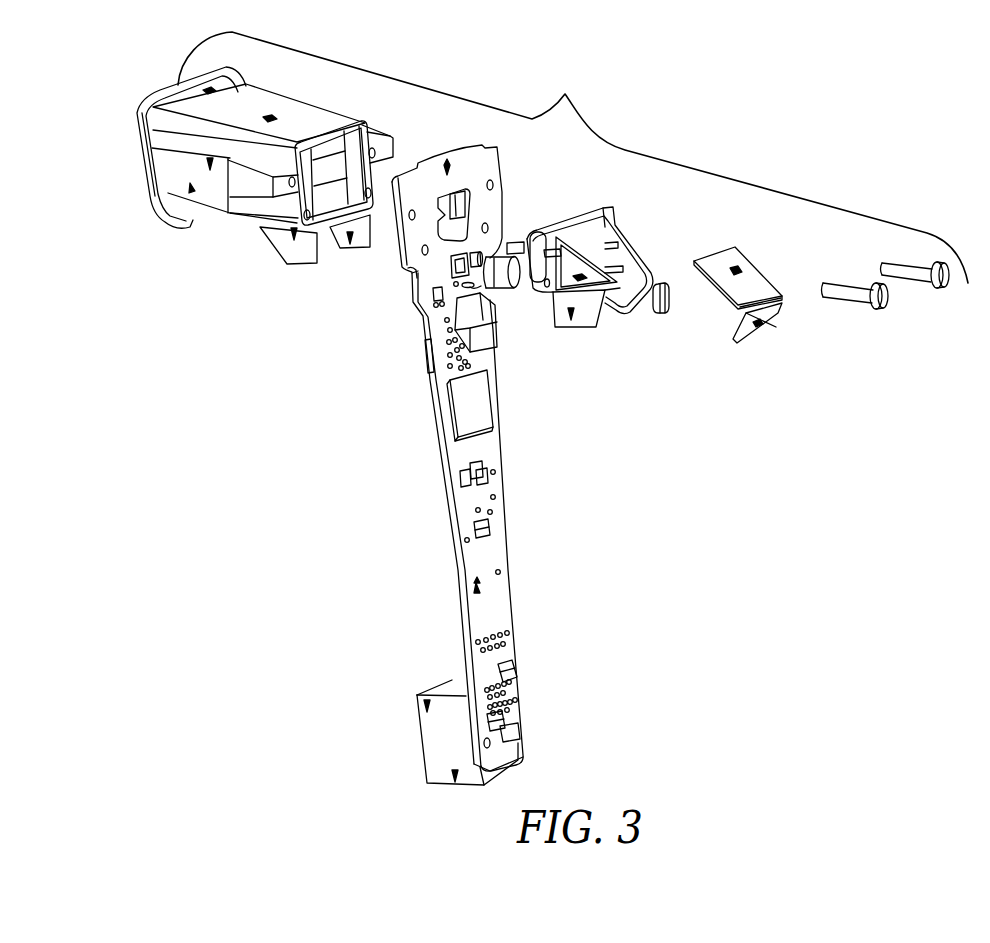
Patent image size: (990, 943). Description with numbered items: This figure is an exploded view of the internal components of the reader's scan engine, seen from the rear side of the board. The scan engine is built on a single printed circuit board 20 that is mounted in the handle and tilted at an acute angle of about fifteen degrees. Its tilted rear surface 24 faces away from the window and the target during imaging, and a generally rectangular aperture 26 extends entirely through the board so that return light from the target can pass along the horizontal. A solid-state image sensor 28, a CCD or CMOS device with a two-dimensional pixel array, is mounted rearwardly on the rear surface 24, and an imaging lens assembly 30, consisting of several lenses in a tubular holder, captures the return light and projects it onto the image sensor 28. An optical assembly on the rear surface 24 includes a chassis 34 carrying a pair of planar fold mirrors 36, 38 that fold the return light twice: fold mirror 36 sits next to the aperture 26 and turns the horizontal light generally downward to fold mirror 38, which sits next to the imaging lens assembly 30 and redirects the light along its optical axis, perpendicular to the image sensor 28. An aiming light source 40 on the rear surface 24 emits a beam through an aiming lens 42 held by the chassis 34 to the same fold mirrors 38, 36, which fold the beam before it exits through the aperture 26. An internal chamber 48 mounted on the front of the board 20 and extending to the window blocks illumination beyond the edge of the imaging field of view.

The printed circuit board 20 is at (460, 574).
The tilted rear surface 24 is at (504, 594).
The aperture 26 is at (428, 252).
The solid-state image sensor 28 is at (445, 243).
The imaging lens assembly 30 is at (505, 283).
The chassis 34 is at (609, 214).
The fold mirror 36 is at (758, 272).
The fold mirror 38 is at (758, 328).
The aiming light source 40 is at (478, 243).
The aiming lens 42 is at (657, 310).
The internal chamber 48 is at (290, 110).